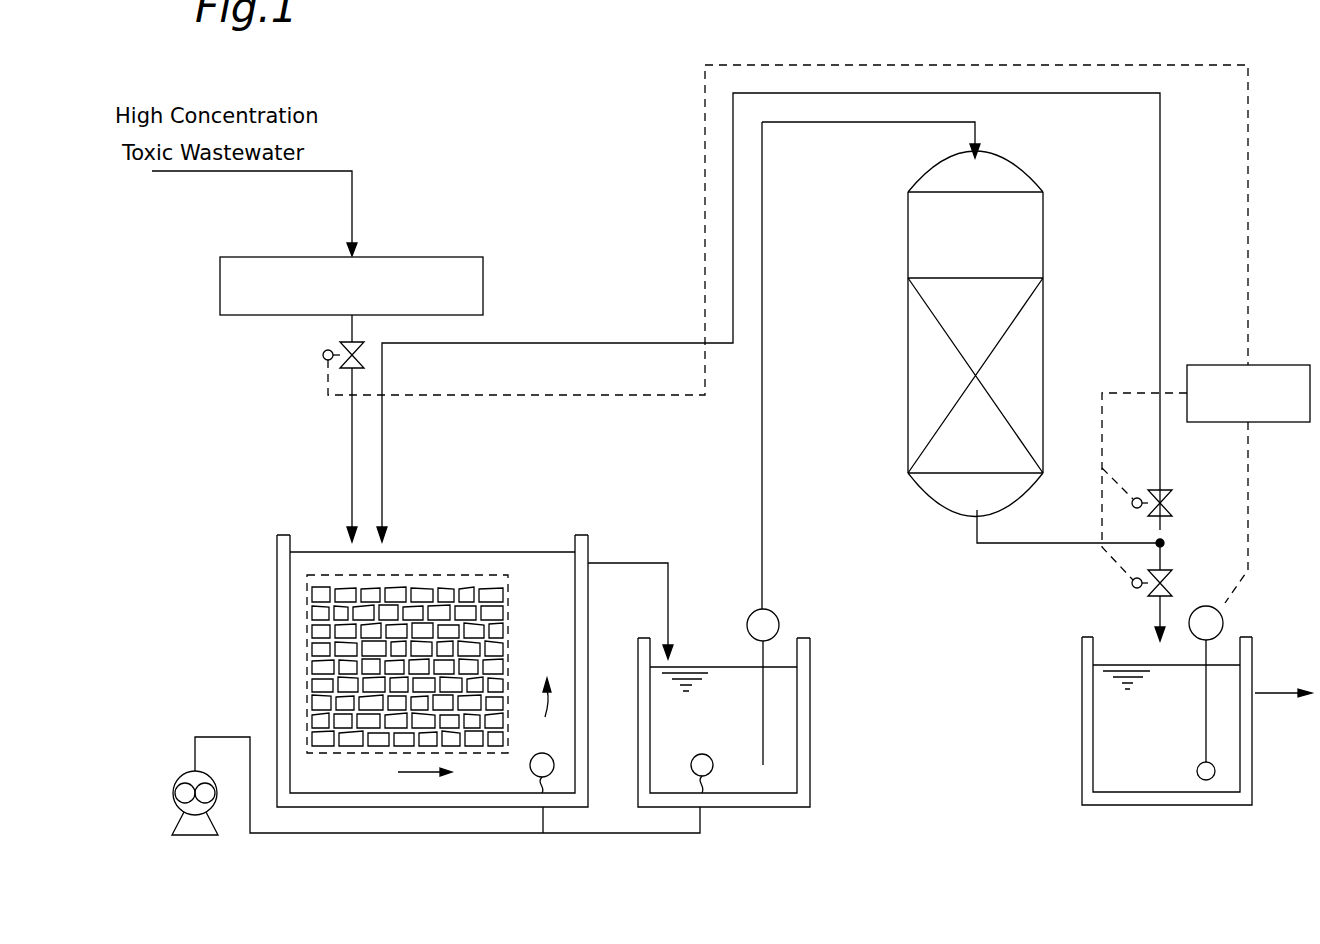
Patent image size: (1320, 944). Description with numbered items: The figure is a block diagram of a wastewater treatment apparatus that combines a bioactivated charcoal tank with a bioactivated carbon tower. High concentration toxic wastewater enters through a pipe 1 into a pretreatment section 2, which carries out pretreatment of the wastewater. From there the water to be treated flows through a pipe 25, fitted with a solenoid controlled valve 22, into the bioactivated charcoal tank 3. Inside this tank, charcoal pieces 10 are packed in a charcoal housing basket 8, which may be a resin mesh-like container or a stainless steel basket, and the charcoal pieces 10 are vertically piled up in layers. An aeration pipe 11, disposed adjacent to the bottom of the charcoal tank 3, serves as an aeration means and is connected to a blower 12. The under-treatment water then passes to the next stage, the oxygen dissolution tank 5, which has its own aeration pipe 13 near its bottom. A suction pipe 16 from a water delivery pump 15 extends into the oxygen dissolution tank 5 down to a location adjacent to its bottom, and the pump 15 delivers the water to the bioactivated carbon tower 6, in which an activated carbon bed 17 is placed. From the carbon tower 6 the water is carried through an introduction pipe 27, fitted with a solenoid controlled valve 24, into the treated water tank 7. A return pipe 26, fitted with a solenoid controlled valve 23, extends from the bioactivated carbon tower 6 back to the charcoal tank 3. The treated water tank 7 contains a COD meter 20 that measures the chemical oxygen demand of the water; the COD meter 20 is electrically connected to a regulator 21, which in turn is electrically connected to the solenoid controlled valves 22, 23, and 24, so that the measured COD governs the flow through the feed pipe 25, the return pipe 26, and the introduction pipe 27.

The pipe 1 is at (357, 207).
The pretreatment section 2 is at (483, 283).
The bioactivated charcoal tank 3 is at (277, 572).
The oxygen dissolution tank 5 is at (810, 655).
The bioactivated carbon tower 6 is at (908, 236).
The treated water tank 7 is at (1252, 658).
The charcoal housing basket 8 is at (307, 630).
The charcoal pieces 10 is at (492, 616).
The aeration pipe 11 is at (554, 765).
The blower 12 is at (180, 773).
The aeration pipe 13 is at (705, 754).
The water delivery pump 15 is at (777, 614).
The suction pipe 16 is at (763, 722).
The activated carbon bed 17 is at (1035, 357).
The COD meter 20 is at (1222, 617).
The regulator 21 is at (1278, 365).
The solenoid controlled valve 22 is at (323, 355).
The solenoid controlled valve 23 is at (1181, 503).
The solenoid controlled valve 24 is at (1179, 583).
The pipe 25 is at (352, 440).
The return pipe 26 is at (607, 343).
The introduction pipe 27 is at (1160, 611).